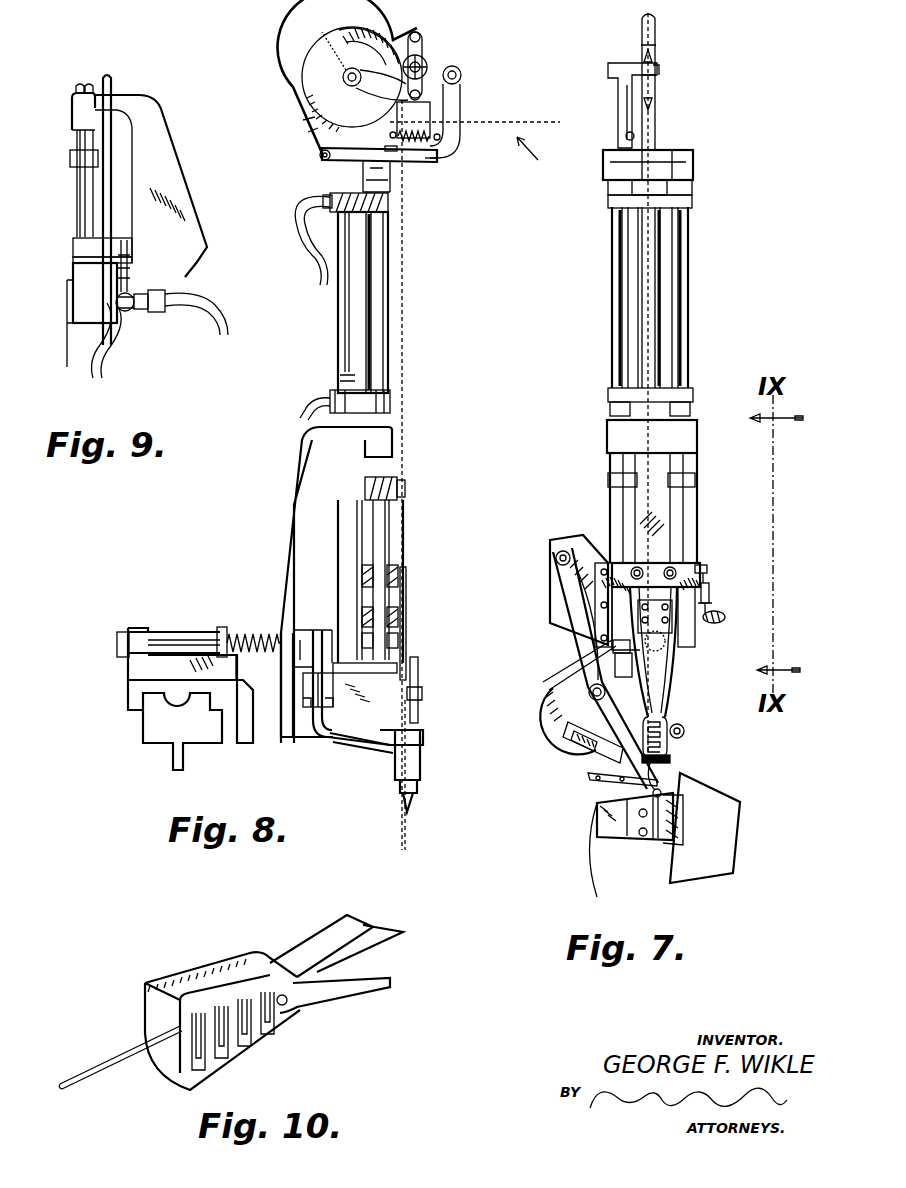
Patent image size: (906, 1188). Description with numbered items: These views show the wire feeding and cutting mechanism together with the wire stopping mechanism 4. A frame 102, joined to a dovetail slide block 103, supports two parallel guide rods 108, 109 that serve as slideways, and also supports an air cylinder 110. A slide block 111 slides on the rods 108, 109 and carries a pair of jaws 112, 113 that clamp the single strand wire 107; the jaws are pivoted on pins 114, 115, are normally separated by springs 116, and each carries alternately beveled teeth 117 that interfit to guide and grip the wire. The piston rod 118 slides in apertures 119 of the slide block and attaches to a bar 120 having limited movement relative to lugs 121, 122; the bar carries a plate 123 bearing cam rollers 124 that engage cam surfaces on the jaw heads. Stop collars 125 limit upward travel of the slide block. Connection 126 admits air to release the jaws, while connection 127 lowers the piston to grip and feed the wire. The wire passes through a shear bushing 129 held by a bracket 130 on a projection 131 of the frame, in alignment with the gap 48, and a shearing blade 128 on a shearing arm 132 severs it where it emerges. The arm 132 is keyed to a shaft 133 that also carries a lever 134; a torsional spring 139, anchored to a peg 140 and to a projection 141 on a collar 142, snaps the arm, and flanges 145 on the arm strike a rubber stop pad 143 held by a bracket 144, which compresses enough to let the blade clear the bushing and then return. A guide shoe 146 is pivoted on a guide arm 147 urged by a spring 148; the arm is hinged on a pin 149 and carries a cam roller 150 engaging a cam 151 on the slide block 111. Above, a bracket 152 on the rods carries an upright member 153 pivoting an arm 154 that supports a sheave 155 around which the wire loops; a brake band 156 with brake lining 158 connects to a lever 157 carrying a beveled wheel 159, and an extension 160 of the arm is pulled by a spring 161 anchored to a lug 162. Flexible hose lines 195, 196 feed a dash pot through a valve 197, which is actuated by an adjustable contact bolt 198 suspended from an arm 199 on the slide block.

In FIG. 8, the wire stopping mechanism 4 is at (527, 162).
In FIG. 7, the gap 48 is at (667, 840).
In FIG. 9, the frame 102 is at (160, 142).
In FIG. 8, the frame 102 is at (312, 474).
In FIG. 8, the dovetail slide block 103 is at (158, 722).
In FIG. 8, the single strand wire 107 is at (407, 235).
In FIG. 7, the single strand wire 107 is at (648, 350).
In FIG. 10, the single strand wire 107 is at (112, 1048).
In FIG. 7, the guide rod 108 is at (612, 257).
In FIG. 7, the guide rod 109 is at (688, 257).
In FIG. 8, the air cylinder 110 is at (363, 313).
In FIG. 7, the air cylinder 110 is at (640, 309).
In FIG. 9, the slide block 111 is at (83, 290).
In FIG. 8, the slide block 111 is at (394, 572).
In FIG. 7, the slide block 111 is at (707, 570).
In FIG. 7, the jaw 112 is at (670, 689).
In FIG. 10, the jaw 112 is at (222, 952).
In FIG. 7, the jaw 113 is at (668, 705).
In FIG. 10, the jaw 113 is at (273, 1028).
In FIG. 7, the pin 114 is at (635, 565).
In FIG. 7, the pin 115 is at (690, 562).
In FIG. 7, the springs 116 is at (711, 590).
In FIG. 10, the teeth 117 is at (173, 1057).
In FIG. 9, the piston rod 118 is at (92, 208).
In FIG. 8, the piston rod 118 is at (372, 468).
In FIG. 8, the apertures 119 is at (362, 628).
In FIG. 8, the bar 120 is at (400, 620).
In FIG. 7, the bar 120 is at (725, 615).
In FIG. 8, the lug 121 is at (352, 572).
In FIG. 8, the lug 122 is at (408, 643).
In FIG. 8, the plate 123 is at (410, 632).
In FIG. 7, the plate 123 is at (680, 672).
In FIG. 7, the cam rollers 124 is at (685, 732).
In FIG. 7, the stop collars 125 is at (612, 481).
In FIG. 8, the connection 126 is at (334, 393).
In FIG. 8, the connection 127 is at (312, 248).
In FIG. 7, the shearing blade 128 is at (597, 780).
In FIG. 7, the shear bushing 129 is at (672, 763).
In FIG. 7, the bracket 130 is at (580, 760).
In FIG. 7, the projection 131 is at (575, 712).
In FIG. 8, the shearing arm 132 is at (416, 752).
In FIG. 7, the shearing arm 132 is at (555, 703).
In FIG. 8, the shaft 133 is at (150, 632).
In FIG. 8, the lever 134 is at (118, 636).
In FIG. 8, the torsional spring 139 is at (255, 634).
In FIG. 8, the peg 140 is at (278, 678).
In FIG. 8, the projection 141 is at (222, 627).
In FIG. 8, the collar 142 is at (205, 661).
In FIG. 8, the stop pad 143 is at (330, 740).
In FIG. 8, the bracket 144 is at (300, 718).
In FIG. 8, the flanges 145 is at (327, 683).
In FIG. 7, the guide shoe 146 is at (740, 800).
In FIG. 7, the guide arm 147 is at (583, 742).
In FIG. 7, the spring 148 is at (600, 802).
In FIG. 7, the pin 149 is at (585, 682).
In FIG. 7, the cam roller 150 is at (560, 552).
In FIG. 7, the cam 151 is at (550, 578).
In FIG. 8, the bracket 152 is at (347, 157).
In FIG. 8, the upright member 153 is at (452, 148).
In FIG. 8, the arm 154 is at (463, 81).
In FIG. 8, the sheave 155 is at (308, 55).
In FIG. 8, the brake band 156 is at (313, 142).
In FIG. 8, the lever 157 is at (422, 45).
In FIG. 8, the brake lining 158 is at (311, 127).
In FIG. 8, the wheel 159 is at (430, 59).
In FIG. 8, the extension 160 is at (441, 104).
In FIG. 8, the spring 161 is at (428, 143).
In FIG. 8, the lug 162 is at (393, 157).
In FIG. 9, the flexible hose line 195 is at (210, 306).
In FIG. 9, the flexible hose line 196 is at (100, 378).
In FIG. 9, the valve 197 is at (126, 312).
In FIG. 9, the adjustable contact bolt 198 is at (129, 274).
In FIG. 9, the arm 199 is at (132, 251).